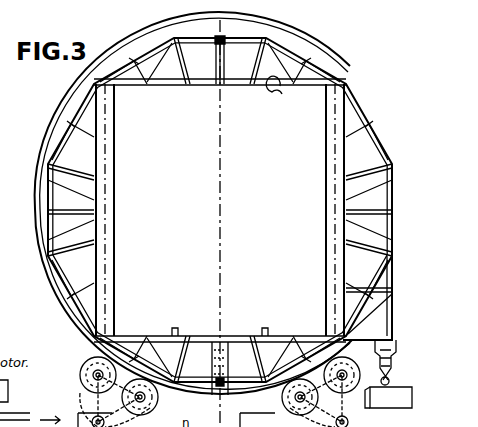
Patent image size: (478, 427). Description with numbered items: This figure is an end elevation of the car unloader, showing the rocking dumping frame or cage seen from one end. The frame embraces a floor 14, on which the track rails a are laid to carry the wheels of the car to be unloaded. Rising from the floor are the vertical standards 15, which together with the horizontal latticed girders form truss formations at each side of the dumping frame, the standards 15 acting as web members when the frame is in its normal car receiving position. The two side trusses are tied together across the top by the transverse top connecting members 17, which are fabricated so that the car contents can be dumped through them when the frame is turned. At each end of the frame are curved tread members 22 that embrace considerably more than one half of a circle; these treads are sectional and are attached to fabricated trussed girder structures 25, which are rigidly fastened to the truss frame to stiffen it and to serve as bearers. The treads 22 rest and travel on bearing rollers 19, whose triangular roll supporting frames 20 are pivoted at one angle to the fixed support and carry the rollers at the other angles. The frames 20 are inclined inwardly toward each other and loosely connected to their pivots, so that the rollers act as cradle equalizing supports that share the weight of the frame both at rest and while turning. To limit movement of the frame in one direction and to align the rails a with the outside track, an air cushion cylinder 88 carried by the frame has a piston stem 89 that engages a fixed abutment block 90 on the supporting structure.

The floor 14 is at (198, 338).
The vertical standards 15 is at (112, 195).
The transverse top connecting members 17 is at (283, 78).
The bearing rollers 19 is at (90, 362).
The roll supporting frames 20 is at (100, 400).
The curved tread members 22 is at (50, 138).
The trussed girder structures 25 is at (66, 199).
The air cushion cylinder 88 is at (397, 352).
The piston stem 89 is at (389, 378).
The abutment block 90 is at (413, 400).
The track rails a is at (264, 328).